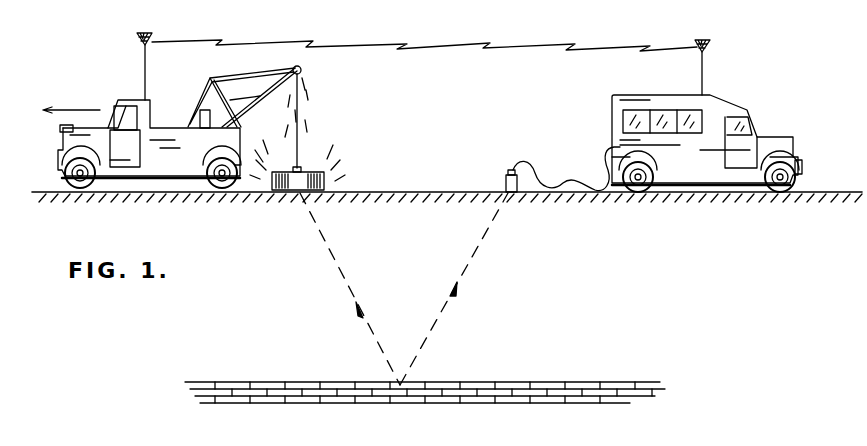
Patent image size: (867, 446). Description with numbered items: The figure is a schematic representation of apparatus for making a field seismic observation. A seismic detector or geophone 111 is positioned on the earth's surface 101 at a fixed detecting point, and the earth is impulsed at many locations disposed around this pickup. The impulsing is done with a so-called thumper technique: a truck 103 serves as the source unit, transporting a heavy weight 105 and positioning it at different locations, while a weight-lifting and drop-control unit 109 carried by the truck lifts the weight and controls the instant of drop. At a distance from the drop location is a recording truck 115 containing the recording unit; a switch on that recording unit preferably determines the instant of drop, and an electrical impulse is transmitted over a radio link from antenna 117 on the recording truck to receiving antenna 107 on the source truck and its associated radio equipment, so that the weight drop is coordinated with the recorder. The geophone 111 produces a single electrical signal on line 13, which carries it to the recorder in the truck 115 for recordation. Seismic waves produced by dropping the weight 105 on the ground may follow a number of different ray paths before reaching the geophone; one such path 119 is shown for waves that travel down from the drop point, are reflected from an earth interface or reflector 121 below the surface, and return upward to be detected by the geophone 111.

The earth's surface 101 is at (405, 190).
The truck 103 is at (102, 102).
The heavy weight 105 is at (318, 163).
The receiving antenna 107 is at (135, 37).
The weight-lifting and drop-control unit 109 is at (204, 99).
The geophone 111 is at (505, 180).
The line 13 is at (567, 180).
The recording truck 115 is at (601, 119).
The transmitting antenna 117 is at (710, 48).
The ray path 119 is at (340, 276).
The reflector 121 is at (590, 382).